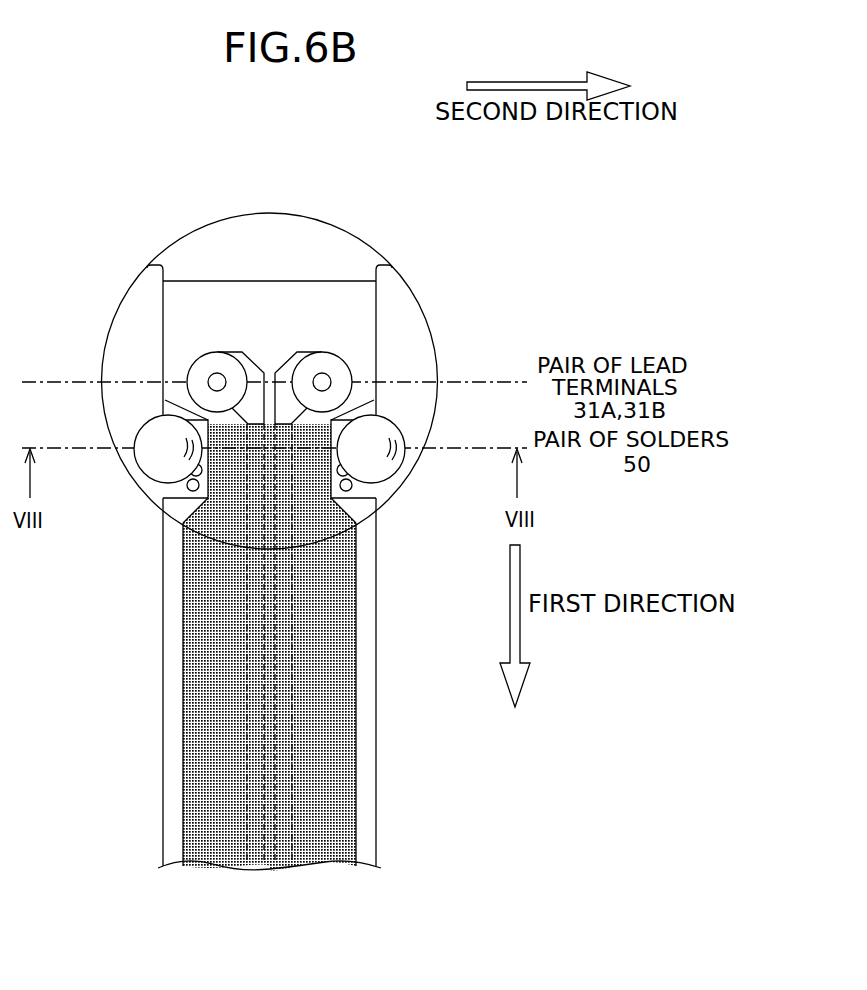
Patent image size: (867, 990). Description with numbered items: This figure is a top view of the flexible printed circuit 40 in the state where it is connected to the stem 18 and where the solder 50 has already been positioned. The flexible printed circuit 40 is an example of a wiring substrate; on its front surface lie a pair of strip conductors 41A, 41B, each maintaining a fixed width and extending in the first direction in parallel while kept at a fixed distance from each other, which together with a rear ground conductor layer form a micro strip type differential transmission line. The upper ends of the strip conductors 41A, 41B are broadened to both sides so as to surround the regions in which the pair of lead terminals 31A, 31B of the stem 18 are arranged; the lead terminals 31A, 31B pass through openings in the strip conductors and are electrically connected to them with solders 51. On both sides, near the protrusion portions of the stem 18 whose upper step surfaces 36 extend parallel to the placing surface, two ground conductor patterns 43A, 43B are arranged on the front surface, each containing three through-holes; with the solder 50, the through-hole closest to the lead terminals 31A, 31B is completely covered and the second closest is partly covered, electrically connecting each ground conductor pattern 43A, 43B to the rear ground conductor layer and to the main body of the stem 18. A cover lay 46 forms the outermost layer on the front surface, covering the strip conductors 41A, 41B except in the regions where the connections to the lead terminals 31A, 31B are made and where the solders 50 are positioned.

The stem 18 is at (320, 248).
The upper step surfaces 36 is at (122, 313).
The solders 51 is at (215, 352).
The lead terminal 31A is at (208, 378).
The lead terminal 31B is at (331, 378).
The solder 50 is at (173, 435).
The ground conductor pattern 43A is at (163, 498).
The ground conductor pattern 43B is at (365, 492).
The flexible printed circuit 40 is at (376, 577).
The cover lay 46 is at (218, 663).
The strip conductor 41A is at (253, 850).
The strip conductor 41B is at (283, 863).